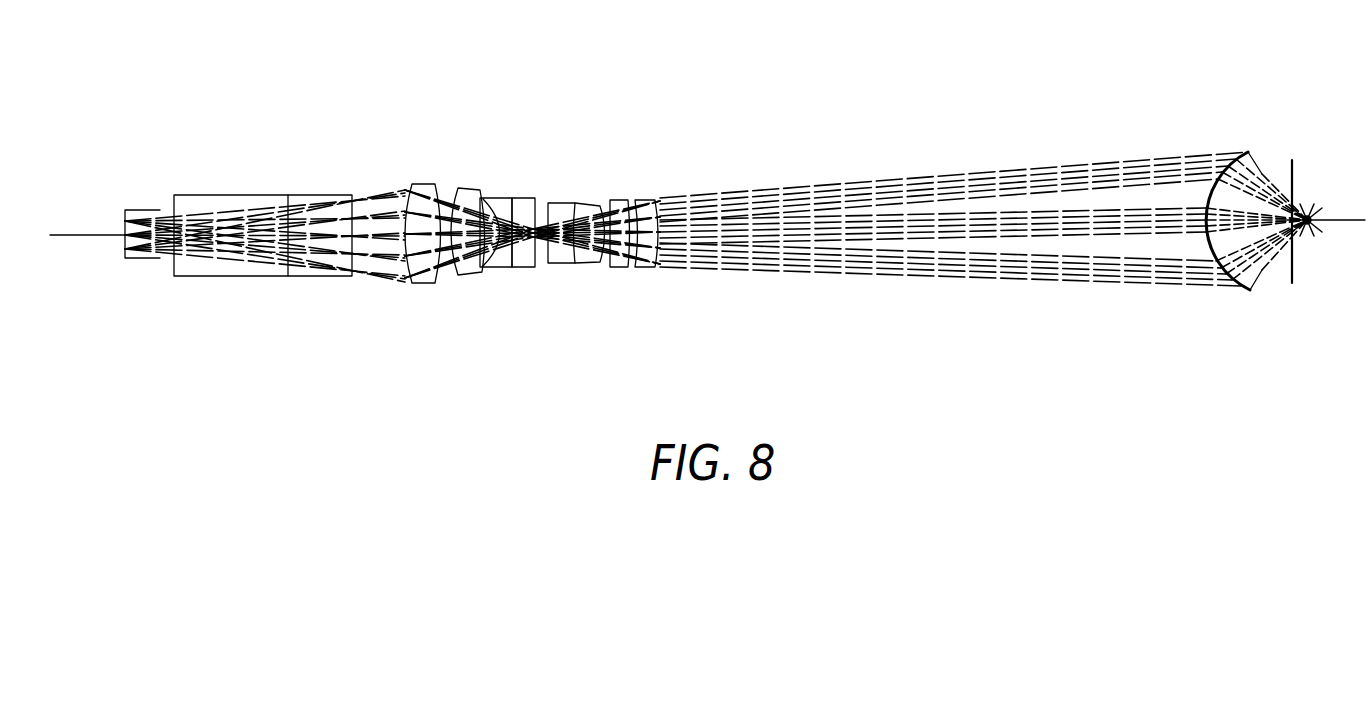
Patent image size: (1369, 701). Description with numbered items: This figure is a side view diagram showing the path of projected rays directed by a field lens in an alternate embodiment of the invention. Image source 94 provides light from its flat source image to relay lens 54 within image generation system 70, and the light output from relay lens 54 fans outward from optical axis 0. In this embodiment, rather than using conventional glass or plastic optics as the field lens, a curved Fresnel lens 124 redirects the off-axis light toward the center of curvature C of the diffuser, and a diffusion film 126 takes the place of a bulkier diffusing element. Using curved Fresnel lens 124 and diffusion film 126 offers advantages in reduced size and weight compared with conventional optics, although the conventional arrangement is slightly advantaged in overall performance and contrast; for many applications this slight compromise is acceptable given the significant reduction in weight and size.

The optical axis 0 is at (72, 235).
The image source 94 is at (127, 211).
The relay lens 54 is at (647, 158).
The image generation system 70 is at (470, 298).
The curved Fresnel lens 124 is at (1206, 242).
The diffusion film 126 is at (1257, 273).
The center of curvature C is at (1313, 213).